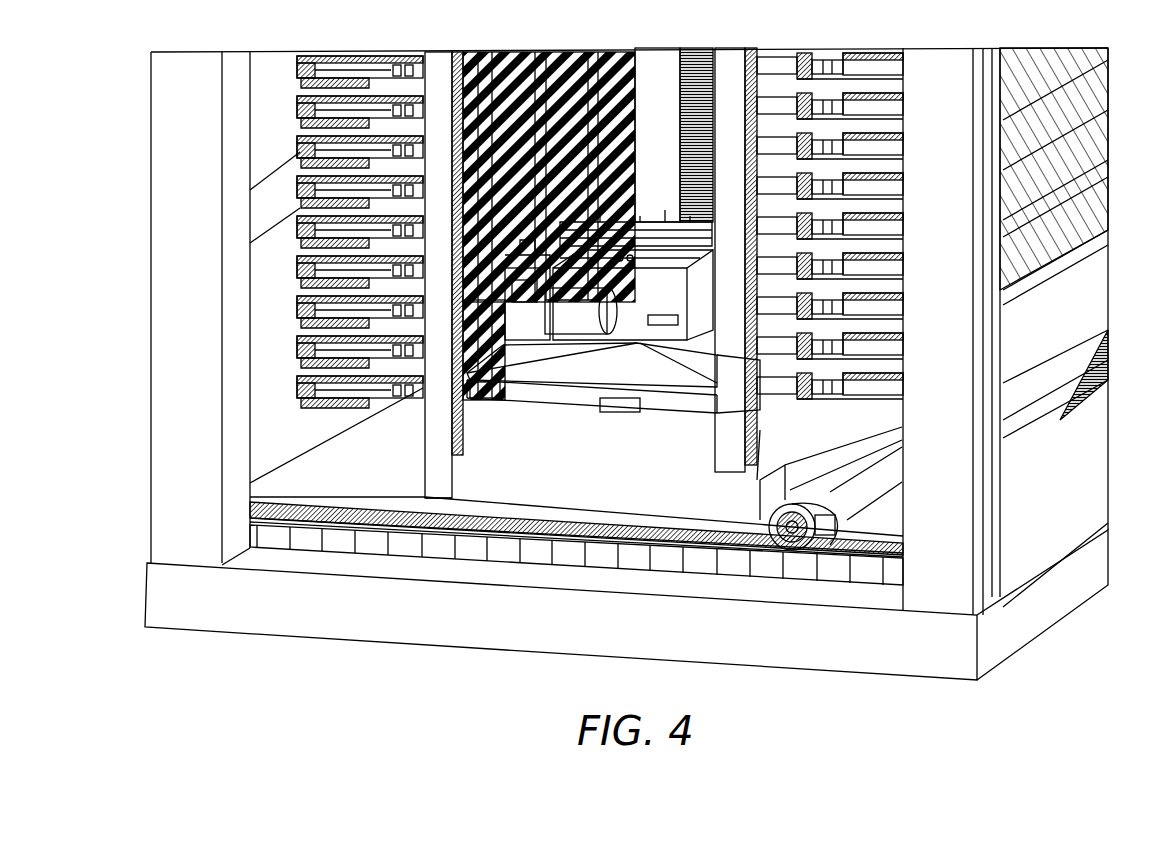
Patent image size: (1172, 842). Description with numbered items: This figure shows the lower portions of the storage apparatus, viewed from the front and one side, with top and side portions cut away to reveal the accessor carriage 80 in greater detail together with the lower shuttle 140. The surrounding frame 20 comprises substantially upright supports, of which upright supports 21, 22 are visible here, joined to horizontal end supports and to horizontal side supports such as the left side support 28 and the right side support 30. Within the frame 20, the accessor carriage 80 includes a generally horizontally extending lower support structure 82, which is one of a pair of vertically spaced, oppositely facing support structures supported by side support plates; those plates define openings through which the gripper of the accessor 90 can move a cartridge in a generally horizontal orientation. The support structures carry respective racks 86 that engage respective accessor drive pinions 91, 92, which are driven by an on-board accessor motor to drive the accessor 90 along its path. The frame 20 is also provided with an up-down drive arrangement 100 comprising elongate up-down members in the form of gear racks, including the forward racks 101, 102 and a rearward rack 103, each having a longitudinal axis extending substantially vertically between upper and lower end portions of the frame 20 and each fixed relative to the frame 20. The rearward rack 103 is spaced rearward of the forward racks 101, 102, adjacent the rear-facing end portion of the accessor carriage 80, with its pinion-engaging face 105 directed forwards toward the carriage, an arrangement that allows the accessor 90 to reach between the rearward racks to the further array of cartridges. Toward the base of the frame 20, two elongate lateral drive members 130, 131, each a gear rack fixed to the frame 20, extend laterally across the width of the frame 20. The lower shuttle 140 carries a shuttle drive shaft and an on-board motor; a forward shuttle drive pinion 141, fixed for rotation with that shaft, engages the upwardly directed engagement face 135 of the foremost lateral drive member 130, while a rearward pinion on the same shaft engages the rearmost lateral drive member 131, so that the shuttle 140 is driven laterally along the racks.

The frame 20 is at (372, 690).
The upright support 21 is at (956, 311).
The upright support 22 is at (200, 273).
The side support 28 is at (270, 318).
The side support 30 is at (1025, 348).
The accessor carriage 80 is at (628, 412).
The lower support structure 82 is at (600, 388).
The rack 86 is at (666, 215).
The accessor 90 is at (667, 311).
The accessor drive pinion 91 is at (510, 380).
The accessor drive pinion 92 is at (525, 235).
The up-down drive arrangement 100 is at (420, 437).
The up-down member 101 is at (725, 60).
The up-down member 102 is at (443, 62).
The up-down member 103 is at (672, 100).
The pinion-engaging face 105 is at (692, 50).
The lateral drive member 130 is at (510, 555).
The lateral drive member 131 is at (1093, 398).
The engagement face 135 is at (355, 503).
The lower shuttle 140 is at (690, 499).
The forward shuttle drive pinion 141 is at (768, 520).